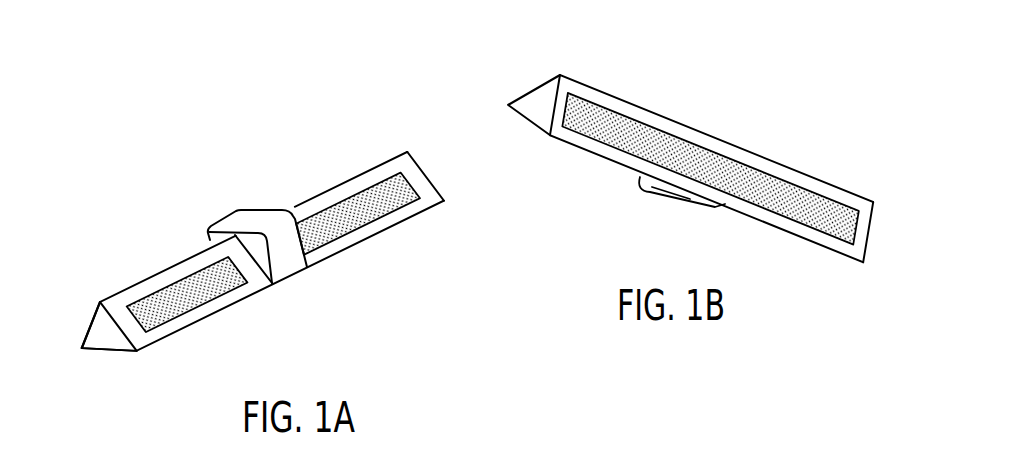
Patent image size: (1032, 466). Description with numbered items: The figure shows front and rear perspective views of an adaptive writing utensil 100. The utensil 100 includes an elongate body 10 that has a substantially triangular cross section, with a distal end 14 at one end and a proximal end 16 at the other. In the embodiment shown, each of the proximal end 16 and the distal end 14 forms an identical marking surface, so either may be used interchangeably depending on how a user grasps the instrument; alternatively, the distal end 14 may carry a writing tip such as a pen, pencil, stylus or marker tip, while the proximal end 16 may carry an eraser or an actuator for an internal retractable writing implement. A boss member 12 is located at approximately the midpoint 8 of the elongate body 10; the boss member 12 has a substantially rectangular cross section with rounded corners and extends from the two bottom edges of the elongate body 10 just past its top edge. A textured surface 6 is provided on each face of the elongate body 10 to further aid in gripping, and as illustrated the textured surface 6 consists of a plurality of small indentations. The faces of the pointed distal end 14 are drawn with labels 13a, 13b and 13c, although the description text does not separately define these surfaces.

In FIG. 1A, the adaptive writing utensil 100 is at (163, 216).
In FIG. 1B, the adaptive writing utensil 100 is at (722, 92).
In FIG. 1A, the elongate body 10 is at (349, 262).
In FIG. 1B, the elongate body 10 is at (758, 233).
In FIG. 1A, the textured surface 6 is at (206, 289).
In FIG. 1B, the textured surface 6 is at (710, 169).
In FIG. 1A, the midpoint 8 is at (286, 287).
In FIG. 1B, the midpoint 8 is at (646, 202).
In FIG. 1B, the boss member 12 is at (641, 183).
In FIG. 1A, the distal end 14 is at (100, 354).
In FIG. 1B, the distal end 14 is at (529, 82).
In FIG. 1A, the proximal end 16 is at (440, 181).
In FIG. 1B, the proximal end 16 is at (872, 247).
In FIG. 1A, the first tip face 13a is at (88, 327).
In FIG. 1A, the second tip face 13b is at (121, 310).
In FIG. 1A, the third tip face 13c is at (103, 353).